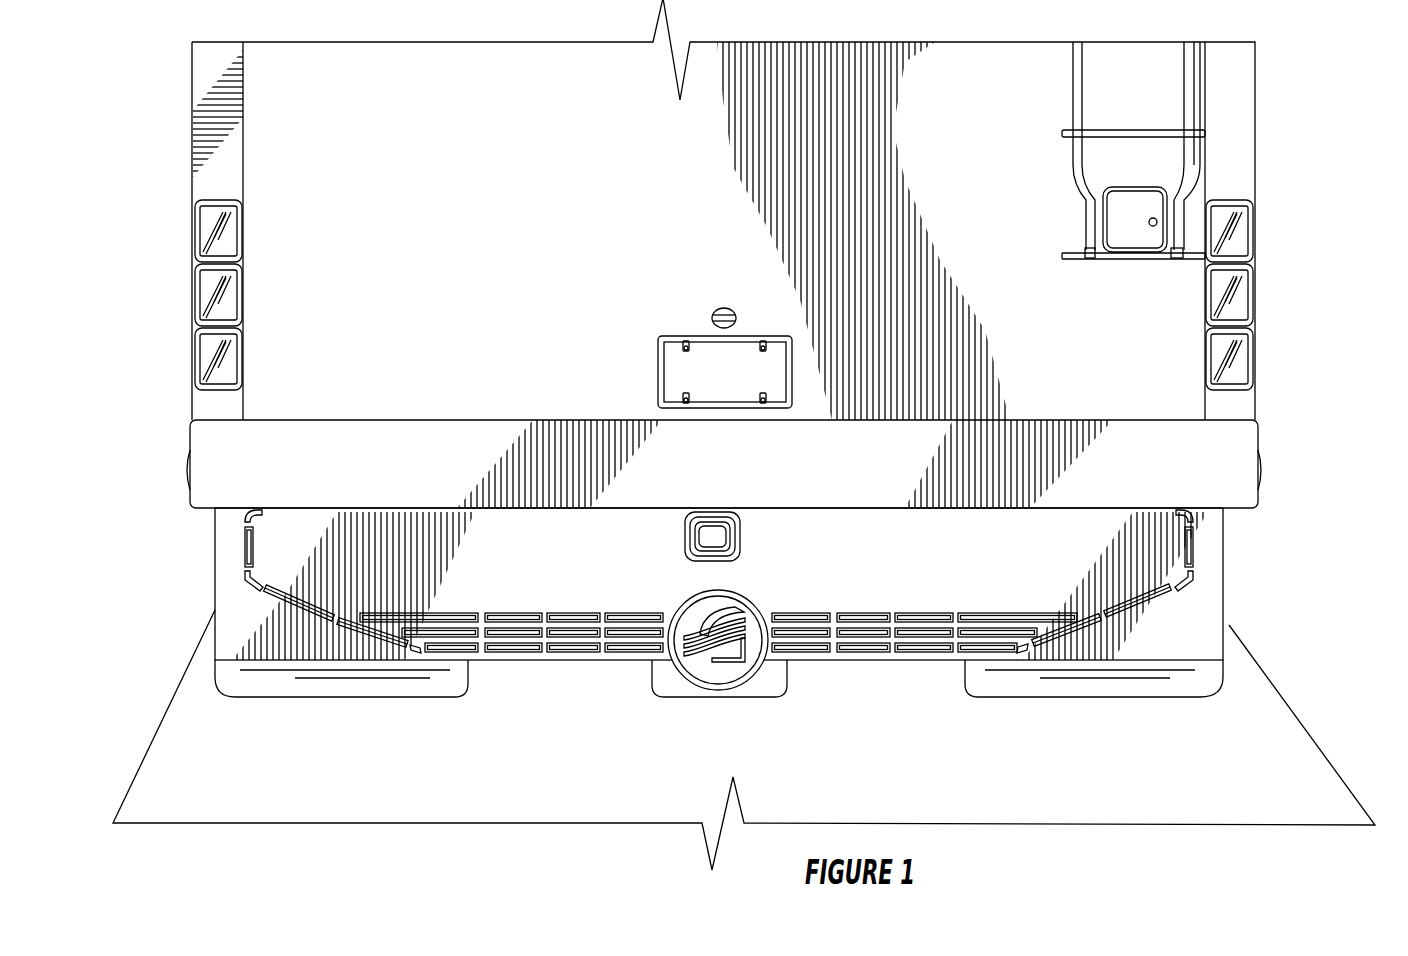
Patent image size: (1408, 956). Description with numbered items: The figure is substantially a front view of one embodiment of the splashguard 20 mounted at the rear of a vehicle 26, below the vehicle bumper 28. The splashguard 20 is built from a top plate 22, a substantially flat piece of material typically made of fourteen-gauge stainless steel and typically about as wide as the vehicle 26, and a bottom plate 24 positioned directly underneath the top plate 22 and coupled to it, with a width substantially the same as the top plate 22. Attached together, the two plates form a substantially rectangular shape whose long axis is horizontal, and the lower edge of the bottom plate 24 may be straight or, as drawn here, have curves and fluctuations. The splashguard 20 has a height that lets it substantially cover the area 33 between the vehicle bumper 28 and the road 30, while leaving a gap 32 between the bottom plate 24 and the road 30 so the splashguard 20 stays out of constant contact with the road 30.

The splashguard 20 is at (804, 615).
The top plate 22 is at (1213, 561).
The bottom plate 24 is at (1201, 677).
The vehicle 26 is at (1290, 310).
The vehicle bumper 28 is at (1237, 463).
The road 30 is at (1228, 765).
The gap 32 is at (486, 705).
The area 33 is at (749, 615).